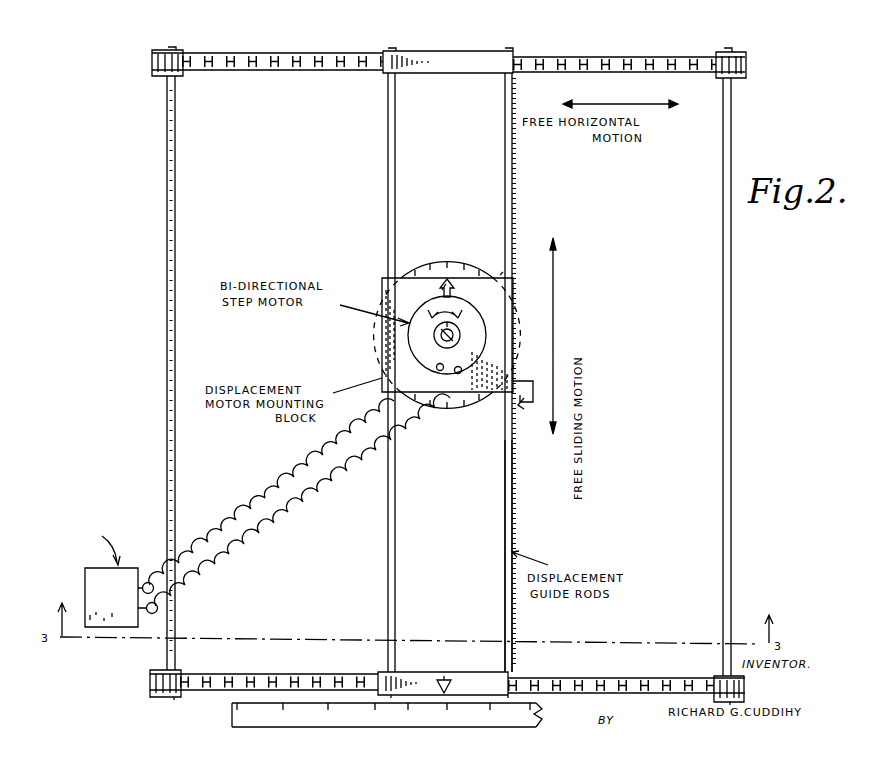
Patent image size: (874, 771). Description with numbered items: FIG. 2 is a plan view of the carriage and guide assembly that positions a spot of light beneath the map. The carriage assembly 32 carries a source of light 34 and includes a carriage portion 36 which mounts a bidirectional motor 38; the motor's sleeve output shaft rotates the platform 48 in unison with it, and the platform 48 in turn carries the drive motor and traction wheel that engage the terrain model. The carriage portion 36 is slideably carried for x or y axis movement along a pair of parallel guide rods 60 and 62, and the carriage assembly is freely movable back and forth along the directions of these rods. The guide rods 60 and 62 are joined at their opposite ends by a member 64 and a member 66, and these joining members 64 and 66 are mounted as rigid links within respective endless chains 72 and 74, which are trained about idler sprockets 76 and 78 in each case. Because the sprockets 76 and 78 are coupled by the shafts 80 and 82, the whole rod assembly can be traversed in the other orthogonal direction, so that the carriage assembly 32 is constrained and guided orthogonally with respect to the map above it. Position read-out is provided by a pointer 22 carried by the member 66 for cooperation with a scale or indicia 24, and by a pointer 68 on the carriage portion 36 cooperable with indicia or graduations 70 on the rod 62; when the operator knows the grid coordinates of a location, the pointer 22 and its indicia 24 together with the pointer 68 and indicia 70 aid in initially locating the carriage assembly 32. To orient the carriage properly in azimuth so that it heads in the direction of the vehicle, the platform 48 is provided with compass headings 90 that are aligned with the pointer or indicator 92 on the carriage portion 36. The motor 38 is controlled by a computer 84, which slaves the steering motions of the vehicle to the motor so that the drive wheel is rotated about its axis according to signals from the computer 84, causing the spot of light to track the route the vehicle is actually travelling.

The pointer 22 is at (444, 677).
The scale or indicia 24 is at (472, 726).
The carriage assembly 32 is at (500, 275).
The source of light 34 is at (460, 330).
The carriage portion 36 is at (516, 302).
The bidirectional motor 38 is at (380, 354).
The platform 48 is at (467, 265).
The guide rod 60 is at (397, 188).
The guide rod 62 is at (514, 172).
The joining member 64 is at (450, 55).
The joining member 66 is at (470, 680).
The pointer 68 is at (533, 382).
The indicia or graduations 70 is at (513, 445).
The endless chain 72 is at (340, 71).
The endless chain 74 is at (322, 676).
The idler sprocket 76 is at (176, 74).
The idler sprocket 78 is at (718, 75).
The shaft 80 is at (177, 330).
The shaft 82 is at (723, 341).
The computer 84 is at (85, 570).
The compass headings 90 is at (442, 272).
The pointer or indicator 92 is at (440, 290).